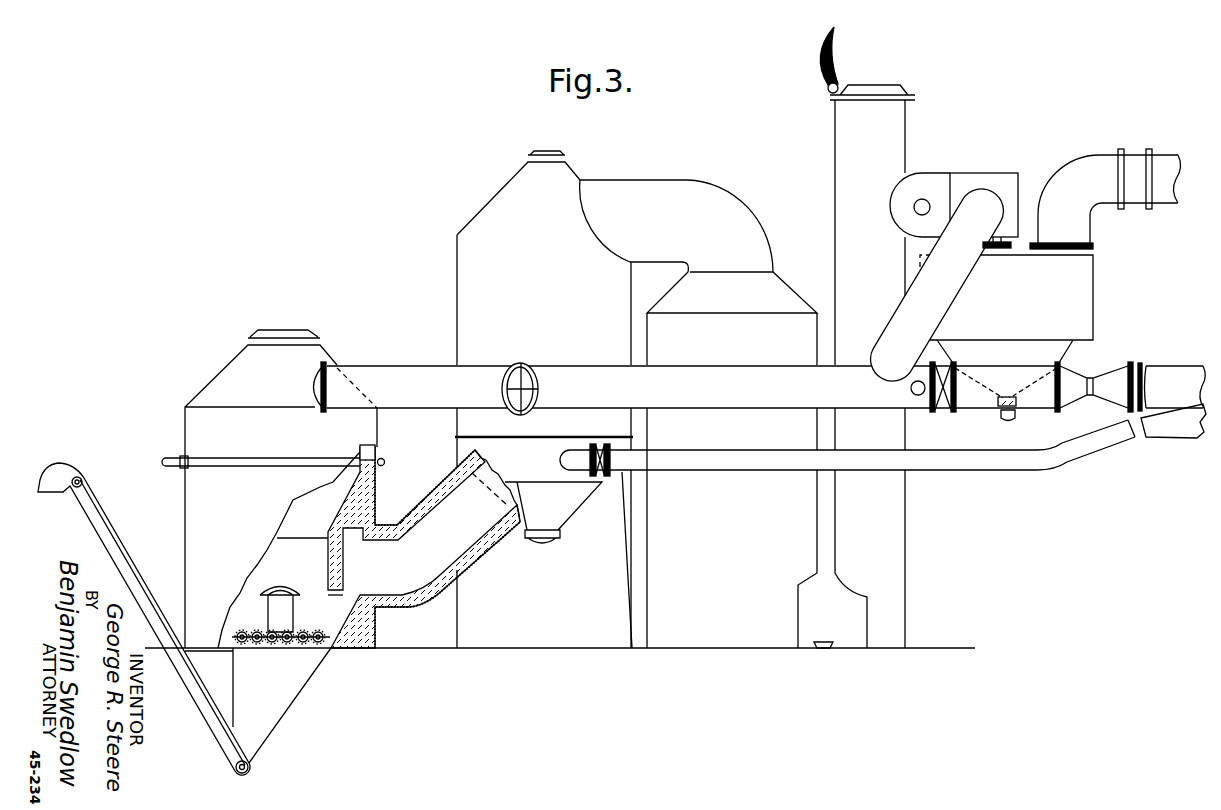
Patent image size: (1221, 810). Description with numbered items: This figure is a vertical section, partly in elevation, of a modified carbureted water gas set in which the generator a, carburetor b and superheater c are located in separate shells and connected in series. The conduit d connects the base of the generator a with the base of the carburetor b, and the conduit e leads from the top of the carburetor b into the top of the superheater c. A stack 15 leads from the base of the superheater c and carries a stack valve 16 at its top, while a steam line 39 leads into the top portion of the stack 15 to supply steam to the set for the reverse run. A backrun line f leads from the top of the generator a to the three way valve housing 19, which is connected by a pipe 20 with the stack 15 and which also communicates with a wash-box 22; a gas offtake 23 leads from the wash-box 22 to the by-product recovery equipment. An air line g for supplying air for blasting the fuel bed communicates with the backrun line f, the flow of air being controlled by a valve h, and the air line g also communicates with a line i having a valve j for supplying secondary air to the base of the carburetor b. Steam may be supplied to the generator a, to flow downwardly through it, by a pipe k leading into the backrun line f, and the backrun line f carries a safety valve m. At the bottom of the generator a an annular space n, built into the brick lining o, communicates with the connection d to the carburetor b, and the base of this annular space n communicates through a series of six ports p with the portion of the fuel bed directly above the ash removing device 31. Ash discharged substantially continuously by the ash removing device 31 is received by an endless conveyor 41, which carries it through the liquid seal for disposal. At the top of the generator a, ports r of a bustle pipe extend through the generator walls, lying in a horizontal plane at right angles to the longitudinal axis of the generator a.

The generator a is at (185, 428).
The carburetor b is at (457, 308).
The superheater c is at (800, 322).
The conduit d is at (459, 572).
The conduit e is at (680, 187).
The backrun line f is at (747, 406).
The air line g is at (1168, 367).
The valve h is at (946, 414).
The line i is at (1101, 447).
The valve j is at (610, 477).
The pipe k is at (912, 393).
The safety valve m is at (522, 364).
The annular space n is at (362, 572).
The brick lining o is at (372, 496).
The ports p is at (334, 610).
The ports r is at (378, 445).
The stack 15 is at (835, 157).
The stack valve 16 is at (840, 52).
The three way valve housing 19 is at (982, 172).
The pipe 20 is at (928, 181).
The wash-box 22 is at (1088, 285).
The gas offtake 23 is at (1085, 163).
The ash removing device 31 is at (318, 645).
The steam line 39 is at (914, 211).
The endless conveyor 41 is at (113, 518).